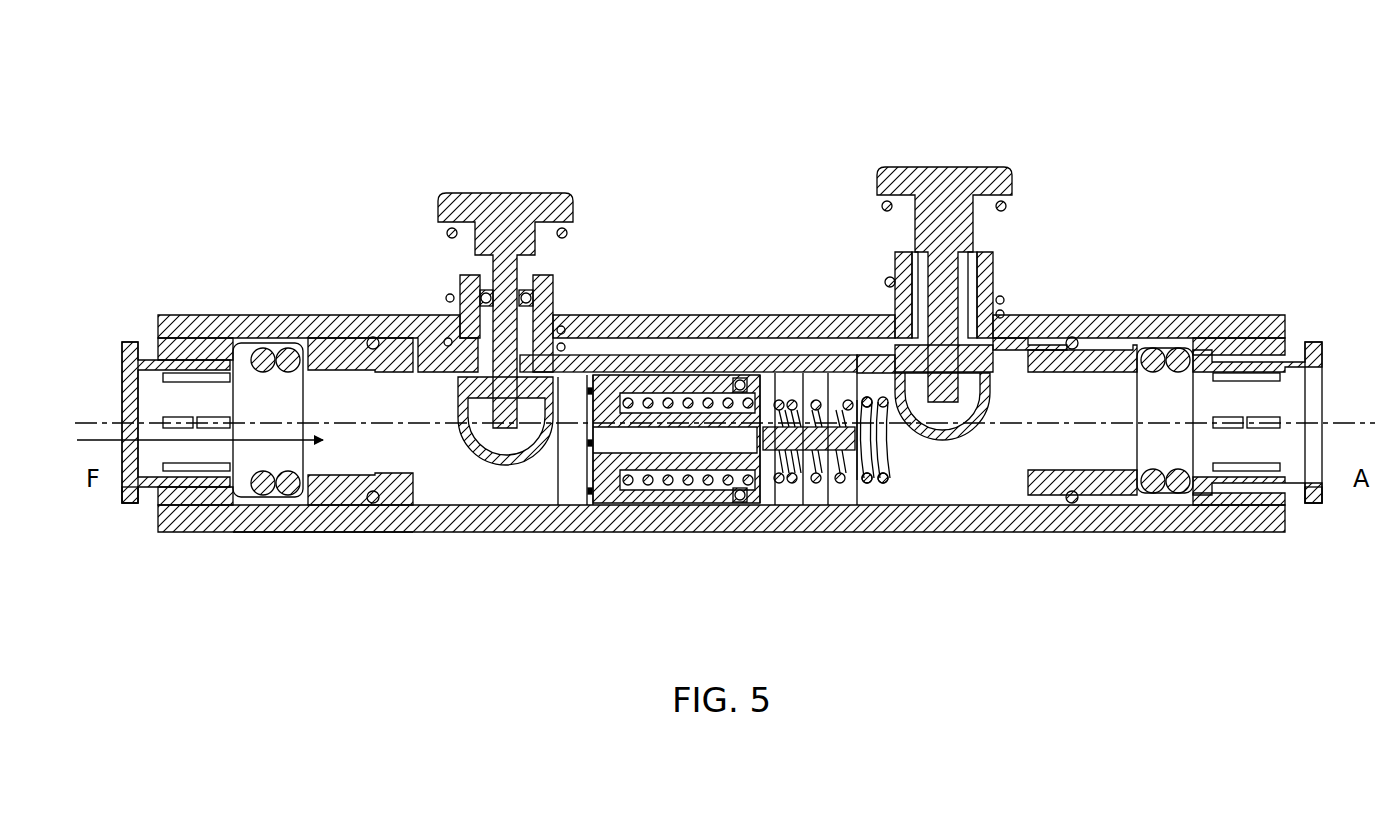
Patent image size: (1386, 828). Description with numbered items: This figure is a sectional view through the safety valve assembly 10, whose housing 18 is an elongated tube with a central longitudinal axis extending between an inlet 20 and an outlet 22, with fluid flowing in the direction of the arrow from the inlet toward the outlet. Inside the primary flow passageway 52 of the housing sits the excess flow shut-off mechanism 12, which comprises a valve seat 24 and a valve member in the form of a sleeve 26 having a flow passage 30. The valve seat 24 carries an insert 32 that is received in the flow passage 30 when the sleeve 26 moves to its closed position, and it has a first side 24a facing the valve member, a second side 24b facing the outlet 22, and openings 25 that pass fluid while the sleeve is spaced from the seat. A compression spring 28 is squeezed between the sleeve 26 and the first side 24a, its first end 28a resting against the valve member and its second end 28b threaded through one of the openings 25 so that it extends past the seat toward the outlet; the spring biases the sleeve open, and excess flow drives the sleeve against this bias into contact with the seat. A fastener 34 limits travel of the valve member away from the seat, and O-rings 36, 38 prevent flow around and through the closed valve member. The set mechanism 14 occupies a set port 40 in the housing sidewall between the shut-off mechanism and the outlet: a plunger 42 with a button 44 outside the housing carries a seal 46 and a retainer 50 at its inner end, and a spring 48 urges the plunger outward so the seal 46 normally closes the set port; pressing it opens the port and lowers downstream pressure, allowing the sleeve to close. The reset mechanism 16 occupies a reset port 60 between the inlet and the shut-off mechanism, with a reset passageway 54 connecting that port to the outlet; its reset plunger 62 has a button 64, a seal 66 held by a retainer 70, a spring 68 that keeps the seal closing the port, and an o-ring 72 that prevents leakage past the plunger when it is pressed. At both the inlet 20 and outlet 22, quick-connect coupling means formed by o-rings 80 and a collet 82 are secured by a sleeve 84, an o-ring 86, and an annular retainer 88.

The safety valve assembly 10 is at (313, 84).
The excess flow shut-off mechanism 12 is at (668, 512).
The set mechanism 14 is at (1027, 218).
The reset mechanism 16 is at (433, 210).
The housing 18 is at (338, 533).
The inlet 20 is at (160, 335).
The outlet 22 is at (1287, 335).
The valve seat 24 is at (845, 482).
The first side of valve seat 24a is at (825, 392).
The second side of valve seat 24b is at (850, 385).
The openings 25 is at (863, 398).
The valve member 26 is at (607, 498).
The spring 28 is at (793, 452).
The first end of spring 28a is at (622, 398).
The second end of spring 28b is at (890, 472).
The flow passage 30 is at (685, 453).
The insert 32 is at (787, 477).
The fastener 34 is at (578, 498).
The O-ring 36 is at (734, 502).
The O-ring 38 is at (813, 482).
The set port 40 is at (987, 283).
The plunger 42 is at (925, 250).
The button 44 is at (880, 183).
The seal 46 is at (1050, 378).
The spring 48 is at (886, 282).
The retainer 50 is at (948, 440).
The primary flow passageway 52 is at (705, 352).
The reset passageway 54 is at (660, 353).
The reset port 60 is at (558, 308).
The reset plunger 62 is at (488, 283).
The button 64 is at (543, 194).
The seal 66 is at (415, 410).
The spring 68 is at (568, 240).
The retainer 70 is at (480, 462).
The o-ring 72 is at (545, 290).
The o-rings 80 is at (263, 495).
The collet 82 is at (127, 352).
The sleeve 84 is at (290, 340).
The o-ring 86 is at (372, 338).
The annular retainer 88 is at (160, 500).